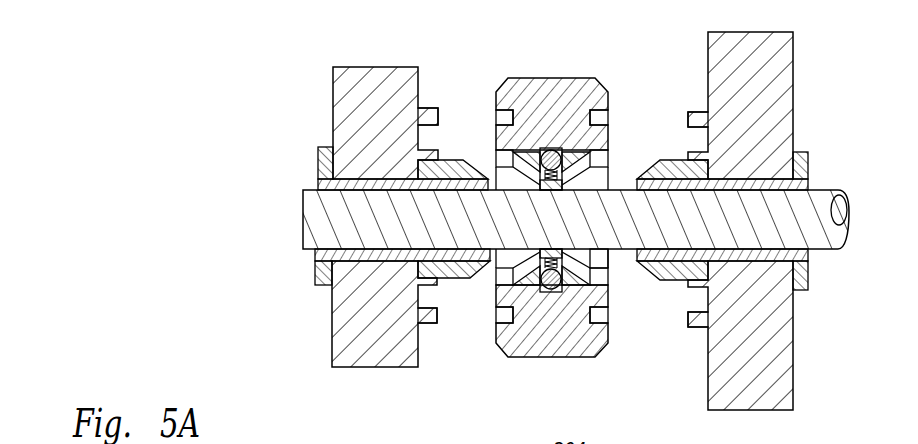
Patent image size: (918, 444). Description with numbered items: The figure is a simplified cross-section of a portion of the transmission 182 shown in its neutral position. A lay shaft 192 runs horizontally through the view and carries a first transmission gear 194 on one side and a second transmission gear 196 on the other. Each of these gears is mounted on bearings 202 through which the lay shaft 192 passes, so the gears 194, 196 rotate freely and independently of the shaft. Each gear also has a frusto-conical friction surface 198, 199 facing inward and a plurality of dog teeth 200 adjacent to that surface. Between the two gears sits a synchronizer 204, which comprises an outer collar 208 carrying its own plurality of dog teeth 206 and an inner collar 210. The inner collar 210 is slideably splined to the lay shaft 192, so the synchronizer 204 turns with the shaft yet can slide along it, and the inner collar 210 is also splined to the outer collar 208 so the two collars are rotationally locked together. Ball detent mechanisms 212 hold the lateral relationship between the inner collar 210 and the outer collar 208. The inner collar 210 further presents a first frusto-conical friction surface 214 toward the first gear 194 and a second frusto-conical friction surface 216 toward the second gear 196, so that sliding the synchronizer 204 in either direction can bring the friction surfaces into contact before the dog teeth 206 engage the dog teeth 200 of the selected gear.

The transmission 182 is at (176, 94).
The lay shaft 192 is at (305, 220).
The first transmission gear 194 is at (337, 88).
The second transmission gear 196 is at (794, 85).
The frusto-conical friction surface 198 is at (470, 157).
The frusto-conical friction surface 199 is at (648, 163).
The dog teeth 200 is at (438, 111).
The bearings 202 is at (318, 170).
The synchronizer 204 is at (543, 57).
The dog teeth 206 is at (490, 118).
The outer collar 208 is at (575, 358).
The inner collar 210 is at (600, 252).
The ball detent mechanisms 212 is at (558, 146).
The first frusto-conical friction surface 214 is at (524, 266).
The second frusto-conical friction surface 216 is at (580, 173).